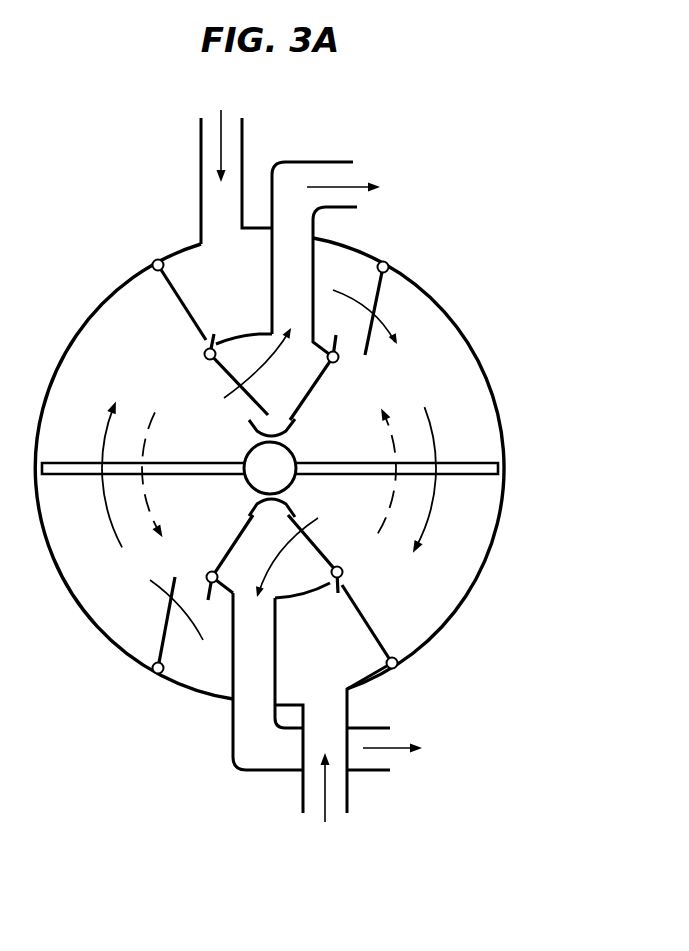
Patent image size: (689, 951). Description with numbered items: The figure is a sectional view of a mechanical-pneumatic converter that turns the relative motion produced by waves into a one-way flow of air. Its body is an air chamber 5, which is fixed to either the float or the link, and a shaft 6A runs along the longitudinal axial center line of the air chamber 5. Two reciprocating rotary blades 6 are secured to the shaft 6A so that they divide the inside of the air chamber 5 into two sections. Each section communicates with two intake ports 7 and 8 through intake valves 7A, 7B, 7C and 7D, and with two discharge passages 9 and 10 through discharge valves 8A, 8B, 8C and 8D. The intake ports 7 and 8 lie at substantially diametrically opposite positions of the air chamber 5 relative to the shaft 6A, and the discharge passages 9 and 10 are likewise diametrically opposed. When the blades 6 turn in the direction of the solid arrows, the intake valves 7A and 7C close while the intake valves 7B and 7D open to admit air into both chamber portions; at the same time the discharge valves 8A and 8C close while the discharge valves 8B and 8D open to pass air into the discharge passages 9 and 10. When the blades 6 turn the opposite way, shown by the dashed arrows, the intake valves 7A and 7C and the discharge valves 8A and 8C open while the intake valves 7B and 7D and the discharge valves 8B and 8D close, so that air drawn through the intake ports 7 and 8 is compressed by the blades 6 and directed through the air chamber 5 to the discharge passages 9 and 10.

The air chamber 5 is at (128, 272).
The rotary blade 6 is at (193, 462).
The shaft 6A is at (296, 456).
The intake port 7 is at (201, 140).
The intake valve 7A is at (178, 300).
The intake valve 7B is at (377, 305).
The intake valve 7C is at (367, 620).
The intake valve 7D is at (165, 628).
The intake port 8 is at (302, 798).
The discharge valve 8A is at (306, 398).
The discharge valve 8B is at (249, 394).
The discharge valve 8C is at (236, 538).
The discharge valve 8D is at (305, 520).
The discharge passage 9 is at (333, 160).
The discharge passage 10 is at (374, 770).